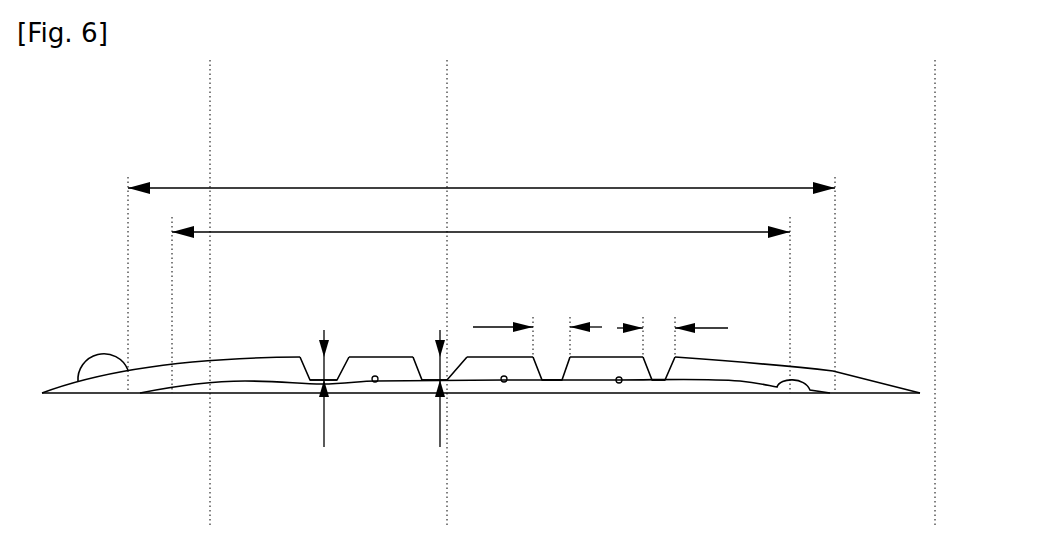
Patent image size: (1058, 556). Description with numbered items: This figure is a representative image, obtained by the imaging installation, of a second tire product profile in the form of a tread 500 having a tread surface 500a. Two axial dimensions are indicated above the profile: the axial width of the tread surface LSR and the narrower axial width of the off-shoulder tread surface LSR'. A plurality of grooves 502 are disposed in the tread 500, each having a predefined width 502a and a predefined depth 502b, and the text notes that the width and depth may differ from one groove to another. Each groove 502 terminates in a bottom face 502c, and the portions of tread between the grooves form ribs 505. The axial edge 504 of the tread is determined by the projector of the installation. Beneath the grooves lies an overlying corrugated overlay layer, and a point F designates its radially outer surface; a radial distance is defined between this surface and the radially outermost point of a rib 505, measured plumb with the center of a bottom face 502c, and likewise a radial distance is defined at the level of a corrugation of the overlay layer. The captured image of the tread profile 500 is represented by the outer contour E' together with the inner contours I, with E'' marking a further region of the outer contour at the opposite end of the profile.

The tread 500 is at (865, 175).
The tread surface 500a is at (148, 368).
The groove 502 is at (300, 357).
The width 502a is at (605, 326).
The depth 502b is at (408, 389).
The bottom face 502c is at (312, 380).
The axial edge 504 is at (80, 383).
The rib 505 is at (378, 357).
The inner contours I is at (207, 385).
The point on radially outer surface of corrugated overlay layer F is at (504, 384).
The outer contour E' is at (745, 445).
The rear upper end region E'' is at (861, 324).
The axial width of the tread surface LSR is at (481, 273).
The axial width of the off-shoulder tread surface LSR' is at (481, 295).